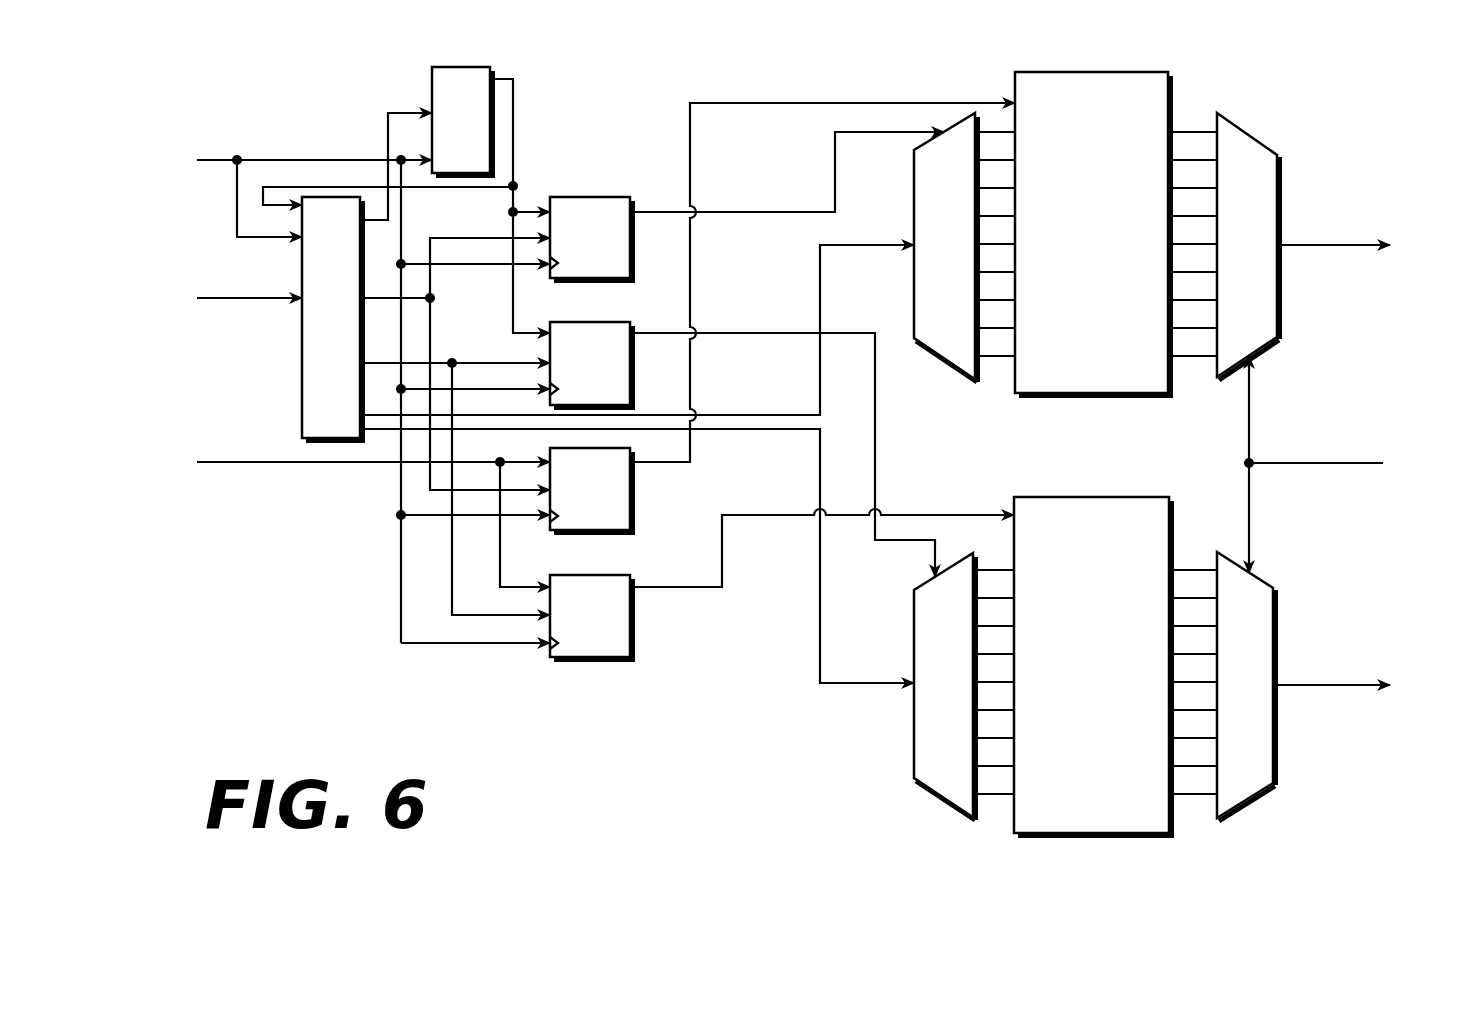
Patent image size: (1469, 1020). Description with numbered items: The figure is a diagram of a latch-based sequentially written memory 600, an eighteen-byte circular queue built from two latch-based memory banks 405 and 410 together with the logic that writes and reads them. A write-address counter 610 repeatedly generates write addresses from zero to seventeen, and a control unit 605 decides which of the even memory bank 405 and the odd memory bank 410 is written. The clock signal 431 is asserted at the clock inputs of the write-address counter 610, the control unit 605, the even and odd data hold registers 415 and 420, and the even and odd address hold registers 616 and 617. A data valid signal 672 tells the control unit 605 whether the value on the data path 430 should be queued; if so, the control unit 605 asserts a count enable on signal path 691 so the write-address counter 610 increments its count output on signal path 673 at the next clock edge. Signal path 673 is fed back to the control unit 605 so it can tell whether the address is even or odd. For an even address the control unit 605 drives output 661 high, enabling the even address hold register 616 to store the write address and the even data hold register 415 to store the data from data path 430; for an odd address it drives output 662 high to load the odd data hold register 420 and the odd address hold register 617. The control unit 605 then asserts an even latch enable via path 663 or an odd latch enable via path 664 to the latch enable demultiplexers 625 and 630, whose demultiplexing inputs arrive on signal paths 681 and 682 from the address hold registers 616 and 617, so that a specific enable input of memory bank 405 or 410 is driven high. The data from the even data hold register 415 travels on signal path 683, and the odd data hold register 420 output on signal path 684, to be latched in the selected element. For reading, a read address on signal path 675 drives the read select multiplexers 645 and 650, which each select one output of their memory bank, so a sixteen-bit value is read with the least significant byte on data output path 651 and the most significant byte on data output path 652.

The sequentially written memory 600 is at (1336, 84).
The even memory bank 405 is at (1115, 101).
The odd memory bank 410 is at (1114, 529).
The even data hold register 415 is at (619, 527).
The odd data hold register 420 is at (619, 654).
The data path 430 is at (231, 466).
The clock signal 431 is at (218, 157).
The control unit 605 is at (351, 345).
The write-address counter 610 is at (484, 163).
The even address hold register 616 is at (619, 274).
The odd address hold register 617 is at (619, 401).
The even latch enable demultiplexer 625 is at (962, 337).
The odd latch enable demultiplexer 630 is at (962, 765).
The read select multiplexer 645 is at (1265, 337).
The read select multiplexer 650 is at (1265, 767).
The data output path 651 is at (1305, 247).
The data output path 652 is at (1305, 688).
The control unit output 661 is at (413, 300).
The control unit output 662 is at (483, 361).
The even latch enable signal path 663 is at (794, 414).
The odd latch enable signal path 664 is at (749, 431).
The data valid signal 672 is at (228, 305).
The count output signal path 673 is at (513, 102).
The read address signal path 675 is at (1305, 465).
The signal path 681 is at (767, 211).
The signal path 682 is at (765, 333).
The signal path 683 is at (668, 464).
The signal path 684 is at (680, 590).
The count enable signal path 691 is at (401, 114).